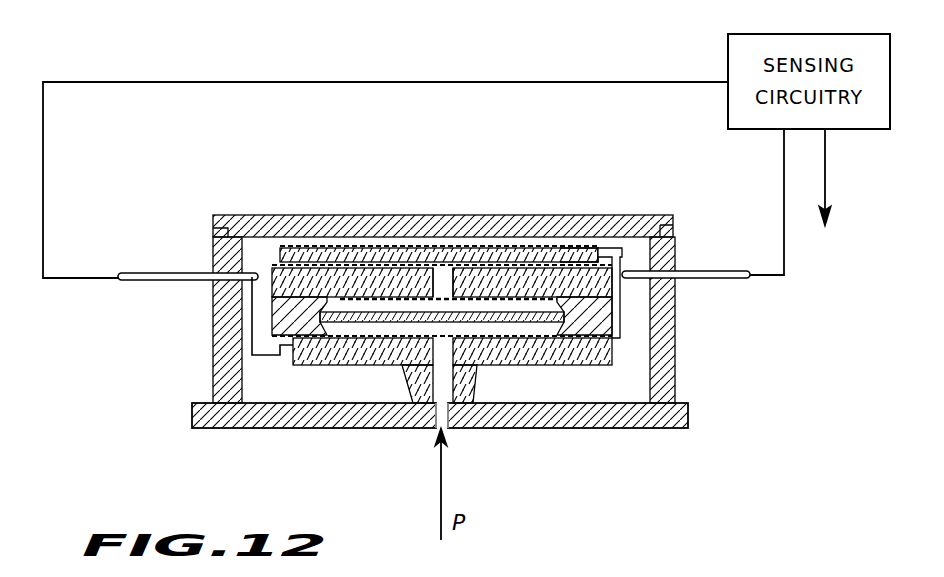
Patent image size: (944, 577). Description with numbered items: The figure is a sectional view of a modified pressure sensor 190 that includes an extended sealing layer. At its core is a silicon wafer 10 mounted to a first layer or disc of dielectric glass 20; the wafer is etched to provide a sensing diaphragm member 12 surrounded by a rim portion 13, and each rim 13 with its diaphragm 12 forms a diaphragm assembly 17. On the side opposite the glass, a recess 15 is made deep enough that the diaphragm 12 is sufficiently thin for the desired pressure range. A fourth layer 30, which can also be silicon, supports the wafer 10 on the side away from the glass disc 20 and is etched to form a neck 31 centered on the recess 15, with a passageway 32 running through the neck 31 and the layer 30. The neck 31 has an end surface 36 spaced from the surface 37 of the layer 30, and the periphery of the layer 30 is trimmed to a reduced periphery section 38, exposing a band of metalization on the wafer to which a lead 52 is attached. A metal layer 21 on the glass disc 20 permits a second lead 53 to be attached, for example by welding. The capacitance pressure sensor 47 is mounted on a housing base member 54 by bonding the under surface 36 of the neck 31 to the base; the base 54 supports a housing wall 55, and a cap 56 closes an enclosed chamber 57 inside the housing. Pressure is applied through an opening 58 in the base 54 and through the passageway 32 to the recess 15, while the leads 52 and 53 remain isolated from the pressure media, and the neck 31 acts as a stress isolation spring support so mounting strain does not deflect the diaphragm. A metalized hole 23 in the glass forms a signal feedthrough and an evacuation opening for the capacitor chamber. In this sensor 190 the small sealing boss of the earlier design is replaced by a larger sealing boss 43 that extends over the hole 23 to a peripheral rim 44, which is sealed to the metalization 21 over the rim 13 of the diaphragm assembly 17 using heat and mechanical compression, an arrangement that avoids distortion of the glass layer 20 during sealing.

The modified pressure sensor 190 is at (447, 313).
The sealing boss 43 is at (413, 235).
The housing wall 55 is at (213, 317).
The enclosed chamber 57 is at (652, 385).
The housing base member 54 is at (262, 430).
The opening 58 is at (437, 420).
The cap 56 is at (228, 215).
The glass disc 20 is at (625, 288).
The lead 52 is at (262, 357).
The metal layer 21 is at (275, 262).
The rim portion 13 is at (293, 248).
The diaphragm assembly 17 is at (322, 258).
The peripheral rim 44 is at (578, 250).
The lead 53 is at (625, 250).
The sensing diaphragm member 12 is at (330, 268).
The metalized hole 23 is at (443, 283).
The silicon wafer 10 is at (626, 313).
The recess 15 is at (475, 328).
The neck 31 is at (482, 372).
The capacitance pressure sensor 47 is at (626, 355).
The end surface 36 is at (470, 410).
The passageway 32 is at (440, 373).
The reduced periphery section 38 is at (325, 367).
The surface 37 is at (600, 367).
The fourth layer 30 is at (612, 367).